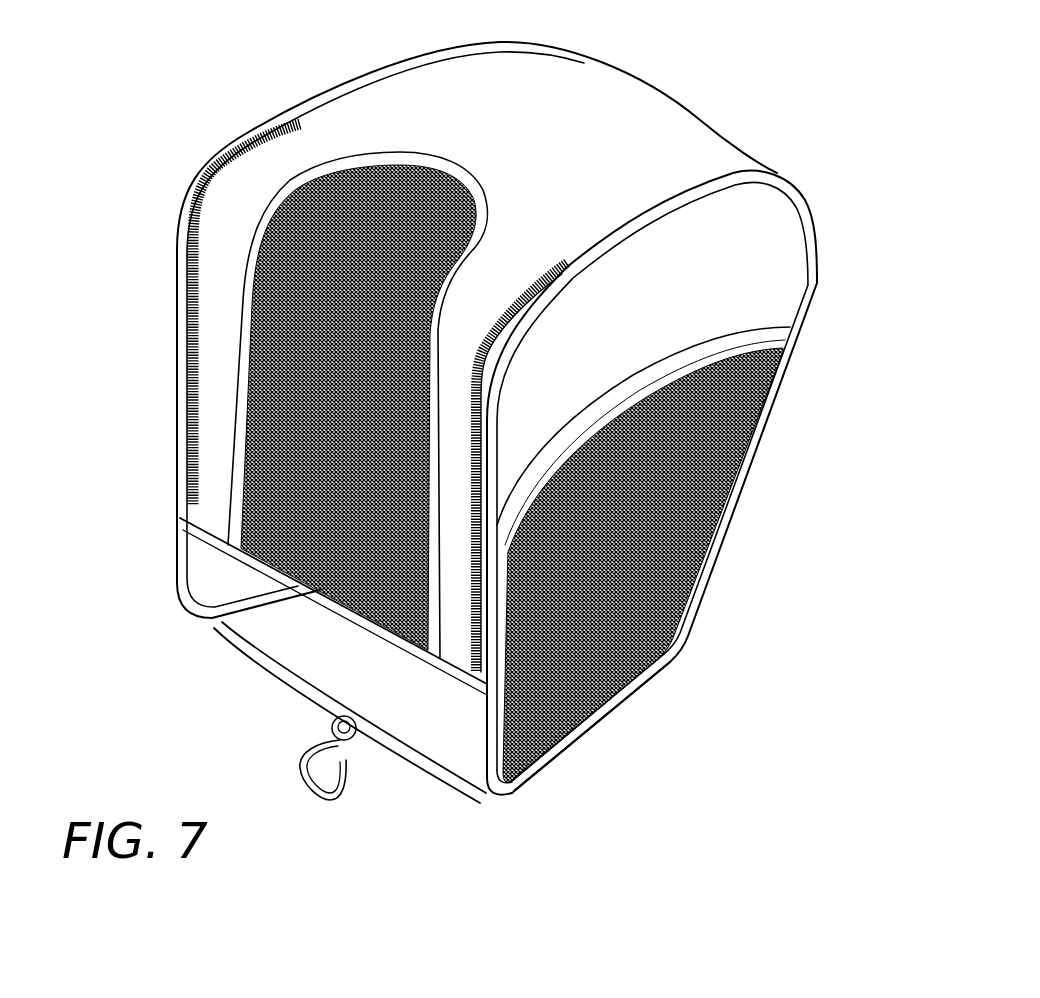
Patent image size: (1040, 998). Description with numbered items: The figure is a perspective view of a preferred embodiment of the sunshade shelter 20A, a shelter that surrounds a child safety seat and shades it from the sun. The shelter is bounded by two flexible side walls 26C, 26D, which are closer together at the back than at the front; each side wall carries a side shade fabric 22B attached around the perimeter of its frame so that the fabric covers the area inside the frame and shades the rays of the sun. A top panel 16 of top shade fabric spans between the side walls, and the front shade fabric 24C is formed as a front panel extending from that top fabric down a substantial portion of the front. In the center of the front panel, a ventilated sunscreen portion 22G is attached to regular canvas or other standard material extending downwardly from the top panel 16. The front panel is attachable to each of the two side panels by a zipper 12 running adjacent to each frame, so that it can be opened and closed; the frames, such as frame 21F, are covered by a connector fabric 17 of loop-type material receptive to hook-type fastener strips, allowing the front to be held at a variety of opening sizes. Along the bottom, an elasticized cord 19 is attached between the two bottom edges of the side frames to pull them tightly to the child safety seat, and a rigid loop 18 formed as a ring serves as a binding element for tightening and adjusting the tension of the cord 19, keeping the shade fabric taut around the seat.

The sunshade shelter 20A is at (662, 43).
The top panel 16 is at (408, 112).
The zipper 12 is at (252, 143).
The side wall 26C is at (172, 247).
The front shade fabric 24C is at (240, 360).
The center ventilated sunscreen portion 22G is at (327, 572).
The side wall 26D is at (772, 291).
The side shade fabric 22B is at (627, 630).
The elasticized cord 19 is at (388, 752).
The connector fabric 17 is at (493, 775).
The frame 21F is at (567, 764).
The rigid loop 18 is at (330, 727).